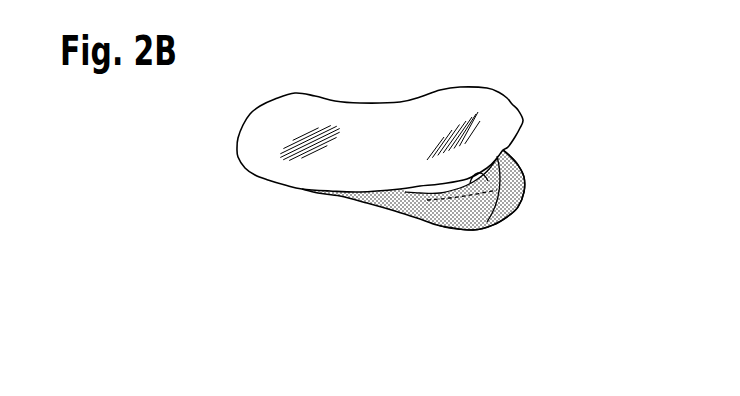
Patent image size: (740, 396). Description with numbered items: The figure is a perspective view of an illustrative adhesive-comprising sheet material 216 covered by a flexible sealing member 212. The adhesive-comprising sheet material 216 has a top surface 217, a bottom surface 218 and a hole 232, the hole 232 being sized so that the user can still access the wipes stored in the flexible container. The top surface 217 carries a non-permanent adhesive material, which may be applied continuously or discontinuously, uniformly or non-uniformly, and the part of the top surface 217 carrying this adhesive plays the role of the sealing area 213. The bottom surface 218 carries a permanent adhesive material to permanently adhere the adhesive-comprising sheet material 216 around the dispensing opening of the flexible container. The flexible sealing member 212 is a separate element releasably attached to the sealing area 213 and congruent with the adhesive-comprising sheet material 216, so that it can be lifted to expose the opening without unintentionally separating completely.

The flexible sealing member 212 is at (475, 100).
The sealing area 213 is at (503, 151).
The adhesive-comprising sheet material 216 is at (523, 180).
The top surface 217 is at (488, 222).
The bottom surface 218 is at (436, 227).
The hole 232 is at (513, 204).